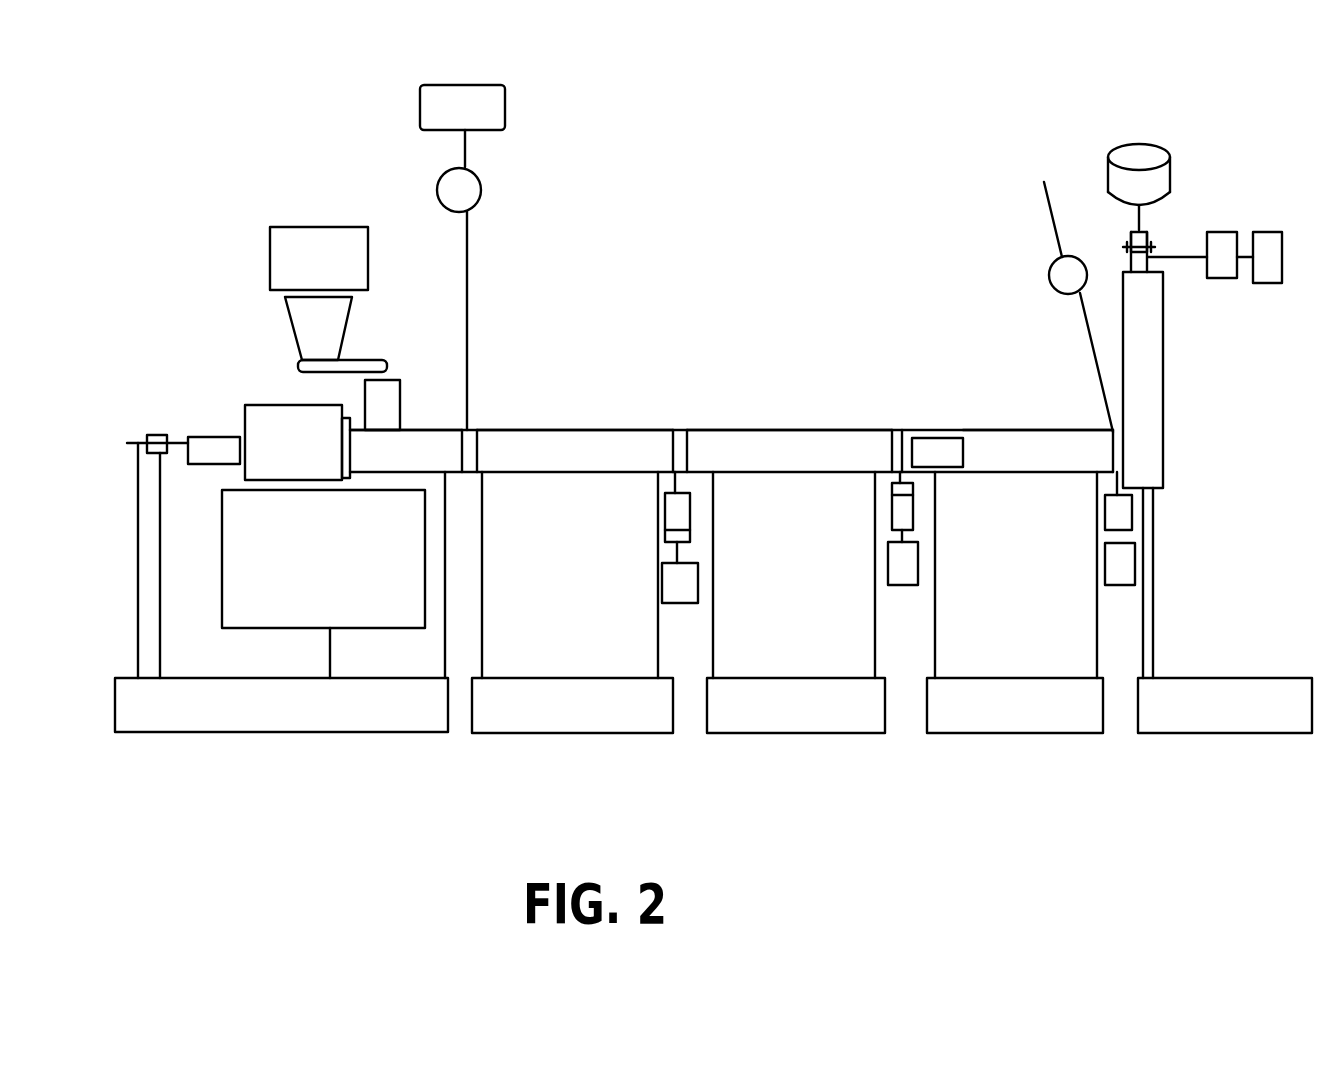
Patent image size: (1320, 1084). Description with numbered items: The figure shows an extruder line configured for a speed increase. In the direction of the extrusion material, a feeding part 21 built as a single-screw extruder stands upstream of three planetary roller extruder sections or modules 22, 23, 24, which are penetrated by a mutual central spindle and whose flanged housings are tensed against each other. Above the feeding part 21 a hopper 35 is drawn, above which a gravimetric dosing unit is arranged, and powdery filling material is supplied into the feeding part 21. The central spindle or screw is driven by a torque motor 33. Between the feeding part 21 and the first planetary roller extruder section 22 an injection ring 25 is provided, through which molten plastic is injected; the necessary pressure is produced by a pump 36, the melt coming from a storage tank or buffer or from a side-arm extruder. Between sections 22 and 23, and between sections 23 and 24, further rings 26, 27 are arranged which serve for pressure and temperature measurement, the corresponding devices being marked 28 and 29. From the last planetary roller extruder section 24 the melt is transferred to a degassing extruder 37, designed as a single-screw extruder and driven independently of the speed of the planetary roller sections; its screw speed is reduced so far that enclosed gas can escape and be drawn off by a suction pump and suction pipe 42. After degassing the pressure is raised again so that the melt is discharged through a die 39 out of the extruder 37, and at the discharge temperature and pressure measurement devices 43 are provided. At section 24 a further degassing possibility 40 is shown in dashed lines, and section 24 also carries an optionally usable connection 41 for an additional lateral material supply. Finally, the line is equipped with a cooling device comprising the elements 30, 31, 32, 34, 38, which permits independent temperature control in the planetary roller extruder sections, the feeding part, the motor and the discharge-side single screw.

The feeding part 21 is at (430, 430).
The planetary roller extruder section/module 22 is at (557, 435).
The planetary roller extruder section/module 23 is at (762, 440).
The planetary roller extruder section/module 24 is at (1030, 438).
The injection ring 25 is at (468, 460).
The ring 26 is at (675, 428).
The ring 27 is at (880, 480).
The pressure and temperature measurement device 28 is at (660, 518).
The pressure and temperature measurement device 29 is at (880, 530).
The cooling device element 30 is at (561, 712).
The cooling device element 31 is at (808, 710).
The cooling device element 32 is at (1008, 712).
The torque motor 33 is at (343, 578).
The cooling device element 34 is at (285, 725).
The hopper 35 is at (297, 318).
The pump 36 is at (470, 195).
The degassing extruder 37 is at (1147, 398).
The cooling device element 38 is at (1203, 710).
The die 39 is at (1145, 235).
The further degassing possibility 40 is at (928, 447).
The connection 41 is at (925, 430).
The suction pump and suction pipe 42 is at (1078, 300).
The temperature and pressure measurement devices 43 is at (1227, 258).